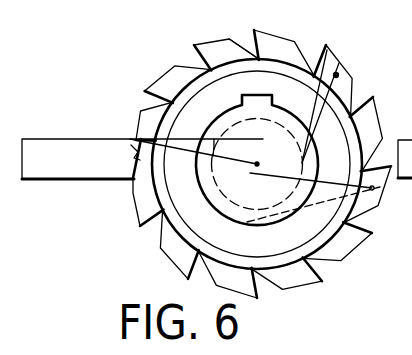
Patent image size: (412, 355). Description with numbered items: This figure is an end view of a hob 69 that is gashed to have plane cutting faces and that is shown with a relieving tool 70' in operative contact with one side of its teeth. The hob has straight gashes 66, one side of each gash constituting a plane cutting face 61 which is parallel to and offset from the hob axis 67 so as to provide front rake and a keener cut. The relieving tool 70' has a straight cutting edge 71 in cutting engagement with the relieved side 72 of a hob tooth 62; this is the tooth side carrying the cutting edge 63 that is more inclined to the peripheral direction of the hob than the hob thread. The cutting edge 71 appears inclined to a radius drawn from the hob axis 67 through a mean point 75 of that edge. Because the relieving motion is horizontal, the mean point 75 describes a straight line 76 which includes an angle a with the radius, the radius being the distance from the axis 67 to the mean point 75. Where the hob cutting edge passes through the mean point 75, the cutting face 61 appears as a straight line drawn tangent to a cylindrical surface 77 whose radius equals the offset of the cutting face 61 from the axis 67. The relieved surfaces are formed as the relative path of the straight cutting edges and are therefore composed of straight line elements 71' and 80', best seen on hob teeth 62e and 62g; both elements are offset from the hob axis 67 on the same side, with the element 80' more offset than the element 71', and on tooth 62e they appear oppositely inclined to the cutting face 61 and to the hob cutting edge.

The plane cutting face 61 is at (210, 51).
The hob tooth 62 is at (287, 33).
The hob tooth 62e is at (321, 58).
The hob tooth 62g is at (374, 195).
The cutting edge 63 is at (133, 188).
The straight gash 66 is at (250, 45).
The hob axis 67 is at (273, 164).
The hob 69 is at (187, 218).
The relieving tool 70' is at (81, 174).
The straight cutting edge 71 is at (118, 124).
The straight line element 71' is at (311, 116).
The relieved side 72 is at (178, 67).
The mean point 75 is at (132, 143).
The straight line 76 is at (232, 141).
The cylindrical surface 77 is at (285, 198).
The straight line element 80' is at (327, 149).
The angle a is at (196, 150).